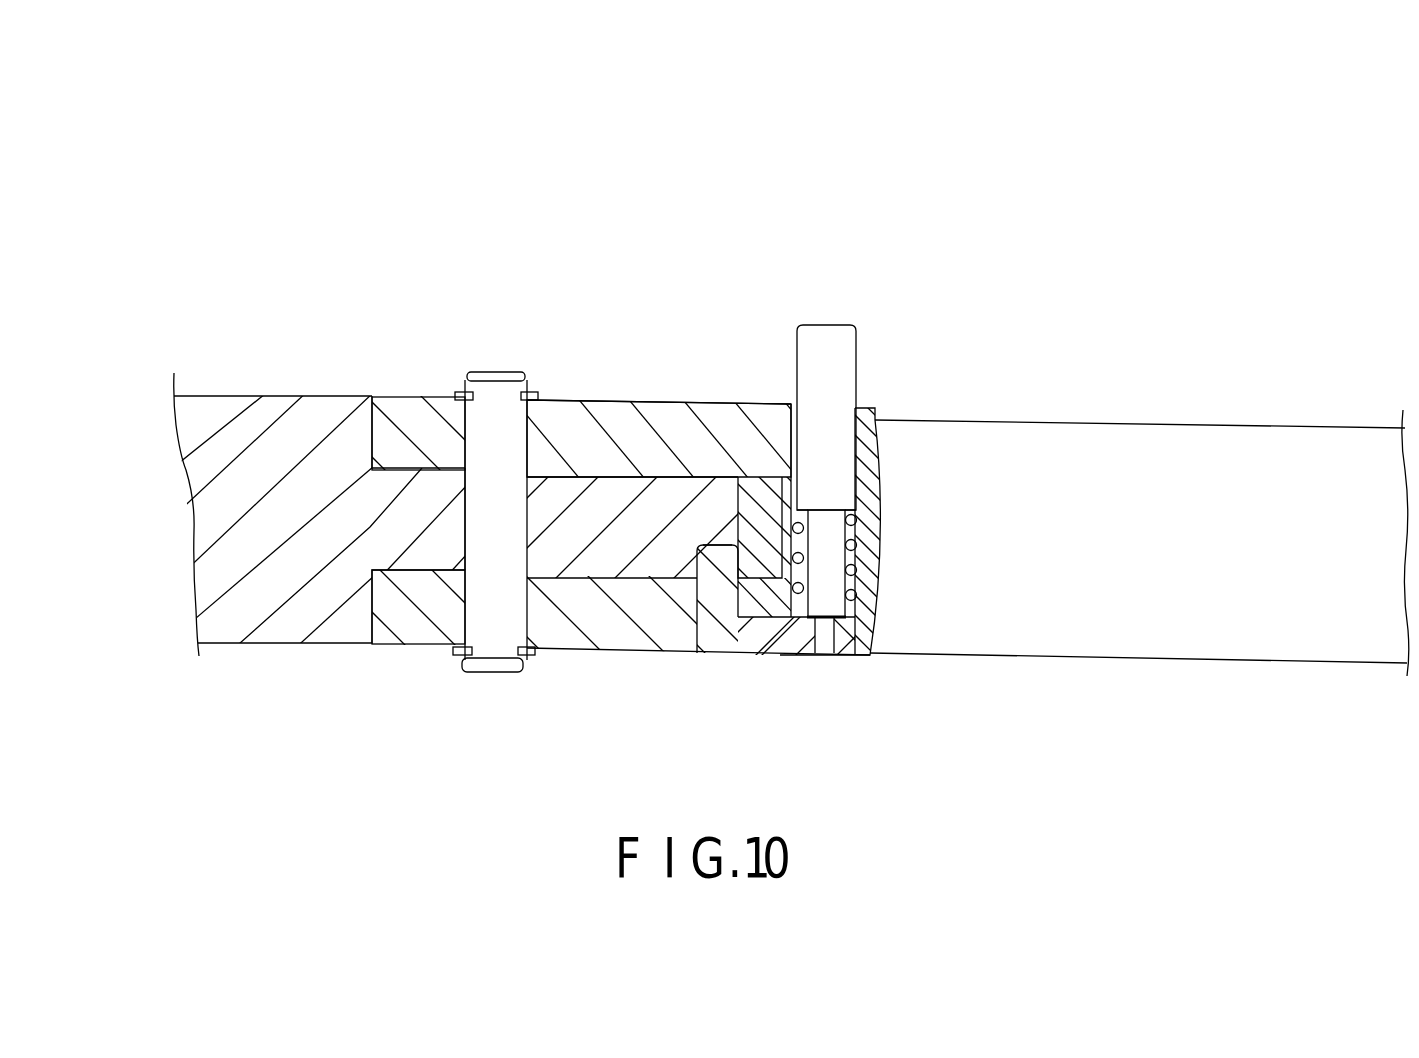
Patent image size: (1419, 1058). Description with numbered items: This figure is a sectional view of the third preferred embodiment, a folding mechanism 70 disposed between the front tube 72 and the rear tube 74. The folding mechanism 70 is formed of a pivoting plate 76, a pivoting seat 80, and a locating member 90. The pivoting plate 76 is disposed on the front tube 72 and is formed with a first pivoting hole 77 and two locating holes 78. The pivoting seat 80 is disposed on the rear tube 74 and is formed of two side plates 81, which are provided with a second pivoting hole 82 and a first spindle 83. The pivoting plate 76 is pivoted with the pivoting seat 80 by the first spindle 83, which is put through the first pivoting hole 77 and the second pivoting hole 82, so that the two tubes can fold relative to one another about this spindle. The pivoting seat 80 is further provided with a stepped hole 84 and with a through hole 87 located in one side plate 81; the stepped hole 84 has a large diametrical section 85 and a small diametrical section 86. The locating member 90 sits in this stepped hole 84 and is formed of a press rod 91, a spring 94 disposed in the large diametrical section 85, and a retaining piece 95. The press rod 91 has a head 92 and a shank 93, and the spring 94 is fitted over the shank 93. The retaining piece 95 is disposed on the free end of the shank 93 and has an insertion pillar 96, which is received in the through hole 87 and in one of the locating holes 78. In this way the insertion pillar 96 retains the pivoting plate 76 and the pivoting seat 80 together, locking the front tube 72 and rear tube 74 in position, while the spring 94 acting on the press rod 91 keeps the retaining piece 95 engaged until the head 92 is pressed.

The folding mechanism 70 is at (580, 152).
The front tube 72 is at (258, 405).
The rear tube 74 is at (1287, 642).
The pivoting plate 76 is at (572, 545).
The first pivoting hole 77 is at (460, 523).
The locating holes 78 is at (690, 540).
The pivoting seat 80 is at (859, 672).
The side plates 81 is at (415, 625).
The second pivoting hole 82 is at (532, 430).
The first spindle 83 is at (492, 598).
The stepped hole 84 is at (873, 535).
The large diametrical section 85 is at (778, 445).
The small diametrical section 86 is at (870, 597).
The through hole 87 is at (767, 627).
The locating member 90 is at (798, 306).
The press rod 91 is at (1004, 257).
The head 92 is at (855, 357).
The shank 93 is at (836, 533).
The spring 94 is at (883, 598).
The retaining piece 95 is at (752, 620).
The insertion pillar 96 is at (720, 557).